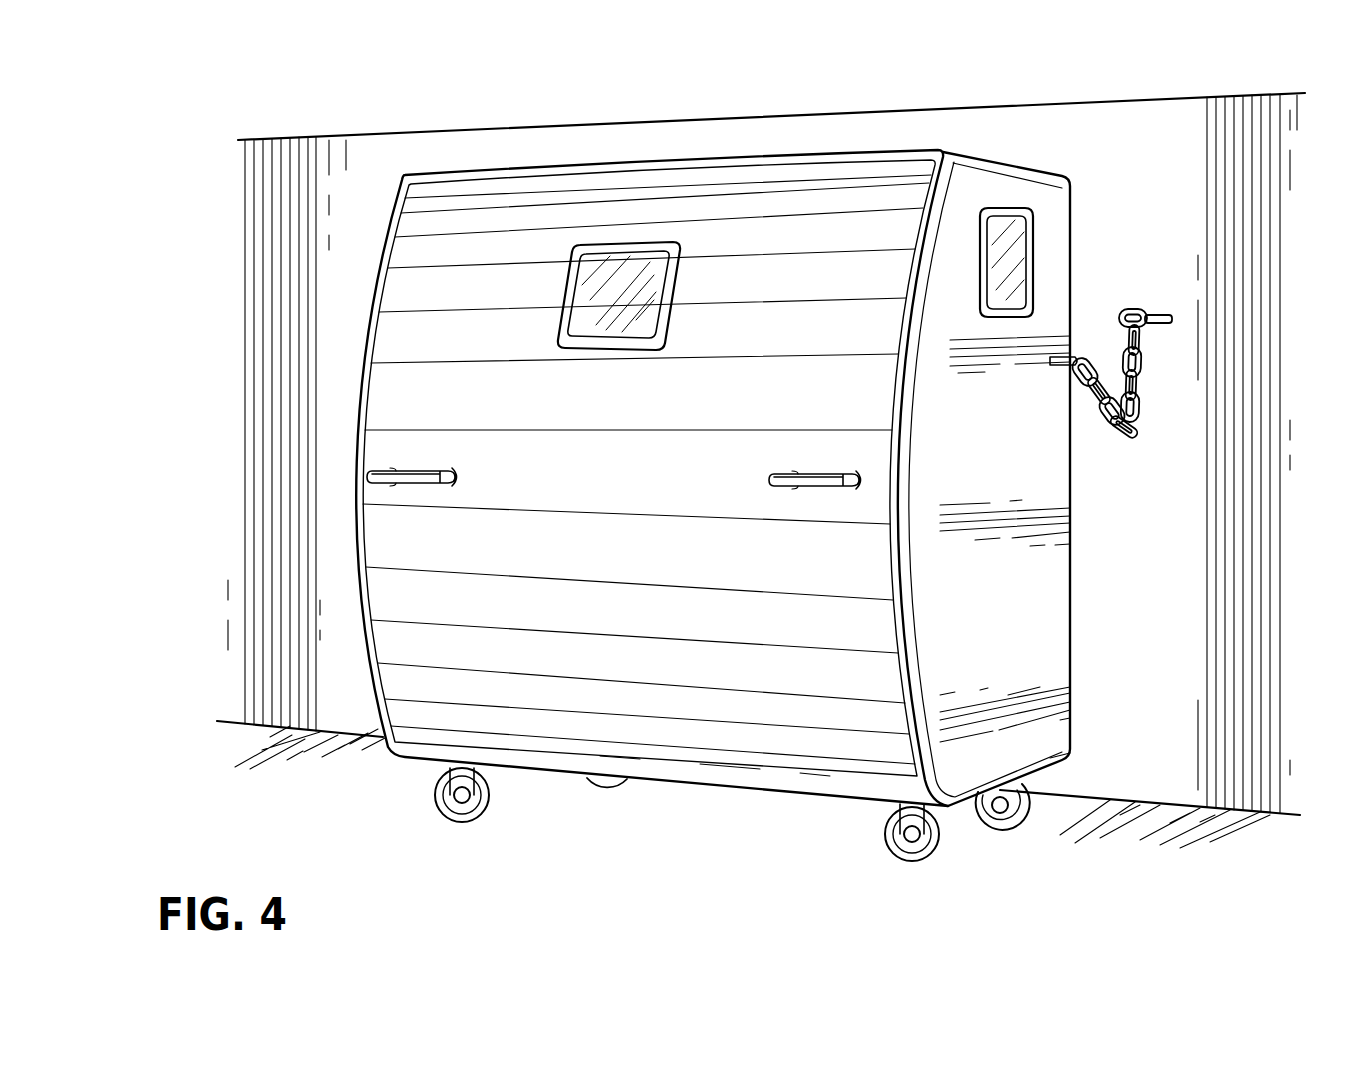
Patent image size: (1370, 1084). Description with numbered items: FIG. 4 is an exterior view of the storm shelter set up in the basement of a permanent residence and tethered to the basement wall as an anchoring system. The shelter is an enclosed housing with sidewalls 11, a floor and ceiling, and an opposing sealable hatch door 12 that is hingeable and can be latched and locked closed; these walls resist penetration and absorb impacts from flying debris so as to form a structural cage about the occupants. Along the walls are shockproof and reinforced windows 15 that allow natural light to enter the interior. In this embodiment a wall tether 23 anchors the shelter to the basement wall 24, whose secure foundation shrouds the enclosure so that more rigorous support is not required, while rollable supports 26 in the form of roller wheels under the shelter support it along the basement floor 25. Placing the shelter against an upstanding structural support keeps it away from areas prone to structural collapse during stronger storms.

The sidewalls 11 is at (1054, 602).
The sealable hatch door 12 is at (738, 738).
The windows 15 is at (621, 326).
The wall tether 23 is at (1162, 378).
The basement wall 24 is at (1158, 234).
The basement floor 25 is at (1045, 851).
The rollable supports 26 is at (445, 803).